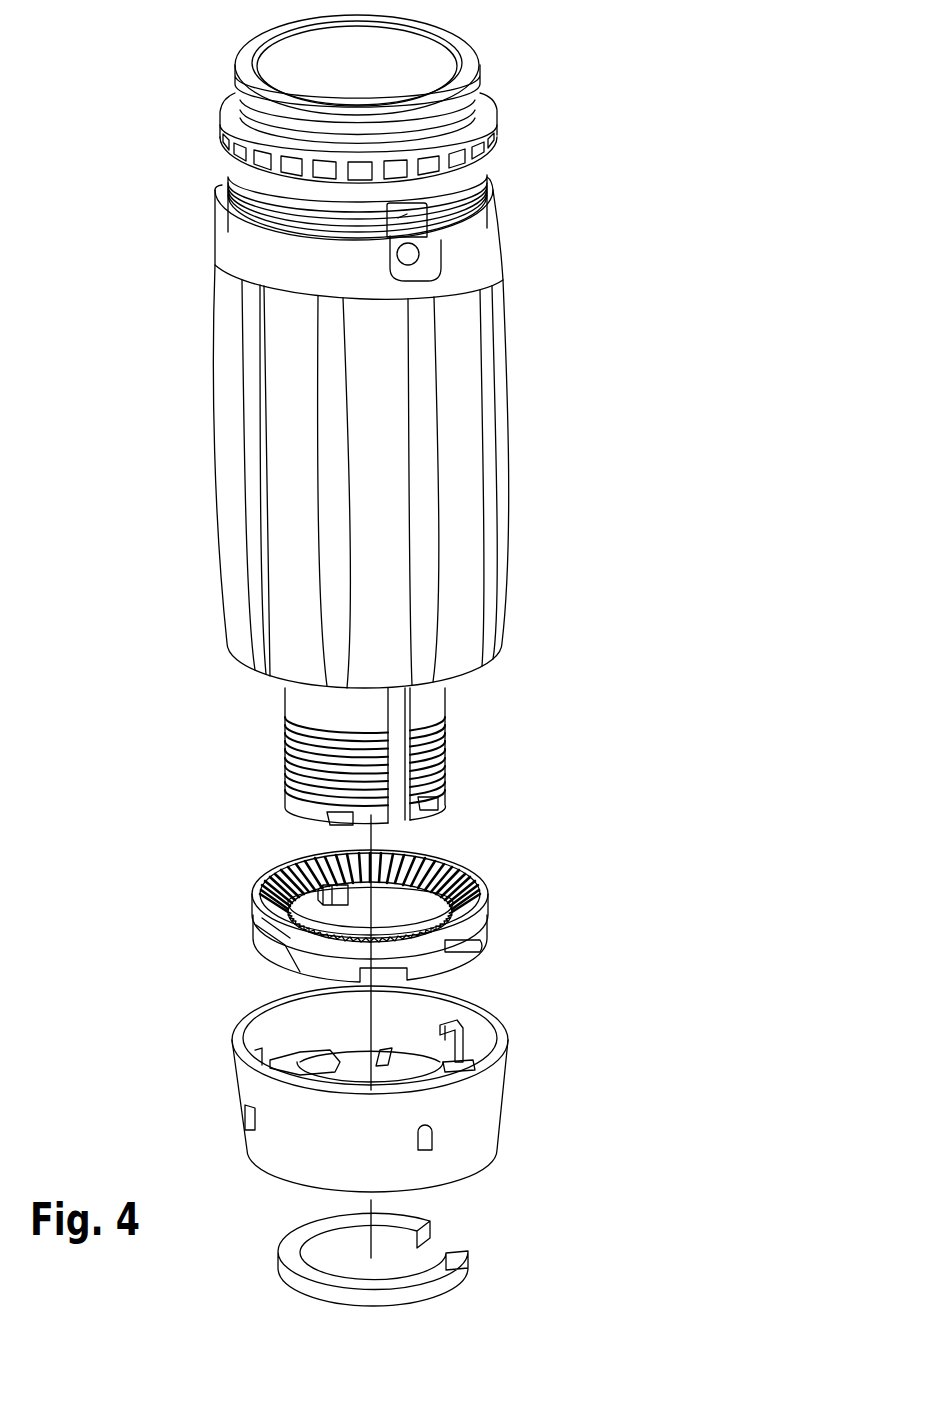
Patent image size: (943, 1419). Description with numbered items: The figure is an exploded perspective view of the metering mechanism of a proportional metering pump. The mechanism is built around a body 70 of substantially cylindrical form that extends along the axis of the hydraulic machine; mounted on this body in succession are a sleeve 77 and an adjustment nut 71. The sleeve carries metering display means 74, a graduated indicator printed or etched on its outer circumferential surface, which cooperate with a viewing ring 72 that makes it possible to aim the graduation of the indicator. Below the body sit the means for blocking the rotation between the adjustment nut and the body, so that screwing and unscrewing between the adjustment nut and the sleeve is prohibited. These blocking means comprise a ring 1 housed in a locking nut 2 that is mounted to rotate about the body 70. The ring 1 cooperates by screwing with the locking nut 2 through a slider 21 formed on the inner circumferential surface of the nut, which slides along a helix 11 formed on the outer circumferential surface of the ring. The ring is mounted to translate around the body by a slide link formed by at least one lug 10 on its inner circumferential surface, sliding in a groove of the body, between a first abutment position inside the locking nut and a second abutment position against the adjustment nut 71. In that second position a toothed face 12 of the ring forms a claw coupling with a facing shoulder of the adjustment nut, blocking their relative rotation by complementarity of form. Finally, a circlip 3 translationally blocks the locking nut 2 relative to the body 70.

The sleeve 77 is at (478, 85).
The metering display means 74 is at (410, 217).
The viewing ring 72 is at (470, 243).
The adjustment nut 71 is at (460, 472).
The body 70 is at (295, 695).
The ring 1 is at (480, 892).
The face 12 is at (450, 870).
The lug 10 is at (280, 880).
The helix 11 is at (278, 953).
The locking nut 2 is at (478, 1103).
The slider 21 is at (455, 1028).
The circlip 3 is at (462, 1275).